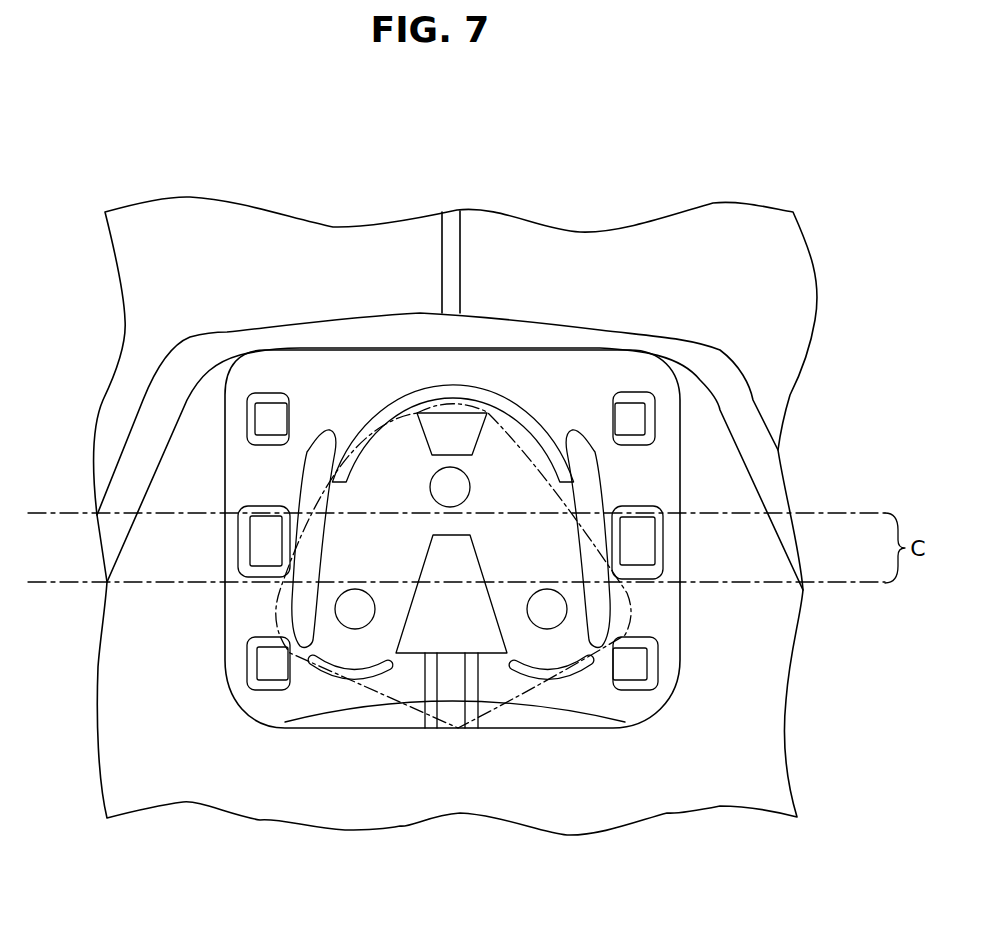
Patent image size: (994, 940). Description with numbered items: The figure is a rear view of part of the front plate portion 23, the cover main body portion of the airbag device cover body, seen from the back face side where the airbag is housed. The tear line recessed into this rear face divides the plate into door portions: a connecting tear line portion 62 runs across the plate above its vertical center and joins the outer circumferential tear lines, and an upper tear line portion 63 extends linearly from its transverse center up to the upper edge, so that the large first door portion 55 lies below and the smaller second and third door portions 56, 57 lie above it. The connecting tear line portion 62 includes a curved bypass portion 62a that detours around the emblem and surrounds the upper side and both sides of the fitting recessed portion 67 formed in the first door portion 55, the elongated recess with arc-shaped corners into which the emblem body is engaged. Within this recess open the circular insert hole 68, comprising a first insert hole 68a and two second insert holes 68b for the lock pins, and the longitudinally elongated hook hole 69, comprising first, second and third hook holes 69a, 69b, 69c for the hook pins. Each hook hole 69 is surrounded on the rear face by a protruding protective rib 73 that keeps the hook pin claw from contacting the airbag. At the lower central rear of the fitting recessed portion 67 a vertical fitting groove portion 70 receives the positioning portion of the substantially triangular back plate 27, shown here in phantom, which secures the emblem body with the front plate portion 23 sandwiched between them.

The front plate portion 23 is at (773, 755).
The first door portion 55 is at (777, 783).
The second door portion 56 is at (500, 238).
The third door portion 57 is at (390, 237).
The upper tear line portion 63 is at (441, 233).
The connecting tear line portion 62 is at (124, 447).
The bypass portion 62a is at (227, 332).
The back plate 27 is at (630, 620).
The fitting recessed portion 67 is at (500, 732).
The insert hole 68 is at (467, 546).
The first insert hole 68a is at (472, 477).
The second insert hole 68b is at (357, 628).
The hook hole 69 is at (451, 531).
The first hook hole 69a is at (290, 418).
The second hook hole 69b is at (243, 573).
The third hook hole 69c is at (290, 653).
The fitting groove portion 70 is at (437, 705).
The rib 73 is at (250, 433).